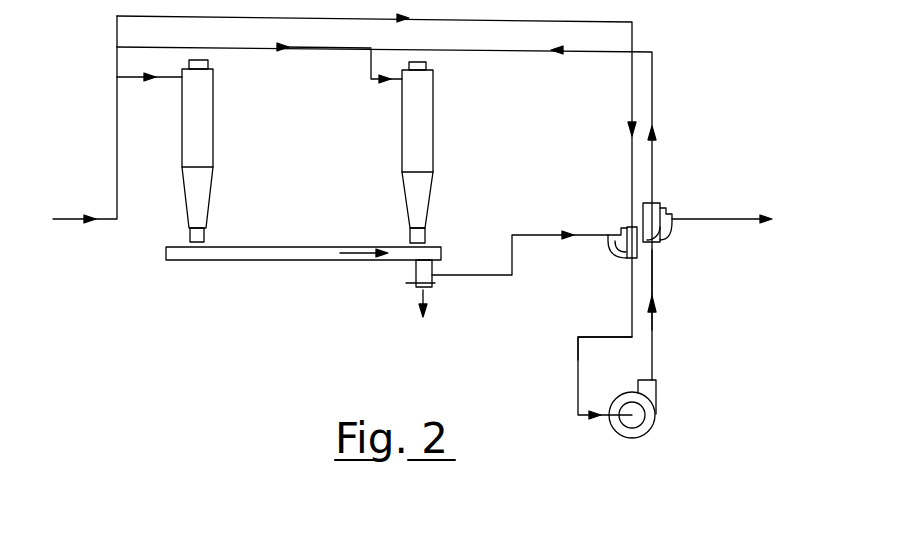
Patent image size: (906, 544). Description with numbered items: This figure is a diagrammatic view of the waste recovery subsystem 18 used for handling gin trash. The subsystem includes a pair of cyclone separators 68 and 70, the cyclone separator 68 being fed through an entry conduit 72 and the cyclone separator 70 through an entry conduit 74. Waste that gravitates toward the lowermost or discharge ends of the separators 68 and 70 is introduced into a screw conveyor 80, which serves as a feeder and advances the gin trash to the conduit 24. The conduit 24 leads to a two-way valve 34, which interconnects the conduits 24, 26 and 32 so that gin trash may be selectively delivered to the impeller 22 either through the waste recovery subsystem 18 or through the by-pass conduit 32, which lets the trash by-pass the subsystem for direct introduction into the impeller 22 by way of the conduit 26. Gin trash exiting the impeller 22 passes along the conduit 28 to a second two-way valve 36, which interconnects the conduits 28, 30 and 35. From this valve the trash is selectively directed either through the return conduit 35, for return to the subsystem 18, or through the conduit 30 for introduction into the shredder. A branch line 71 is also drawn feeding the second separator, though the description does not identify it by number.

The waste recovery subsystem 18 is at (690, 150).
The impeller 22 is at (657, 408).
The conduit 24 is at (525, 235).
The conduit 26 is at (630, 280).
The conduit 28 is at (652, 277).
The conduit 30 is at (733, 219).
The by-pass conduit 32 is at (633, 28).
The two-way valve 34 is at (620, 227).
The return conduit 35 is at (653, 88).
The two-way valve 36 is at (662, 210).
The cyclone separator 68 is at (203, 107).
The cyclone separator 70 is at (423, 105).
The feed line 71 is at (372, 70).
The entry conduit 72 is at (136, 78).
The entry conduit 74 is at (318, 50).
The screw conveyor 80 is at (268, 253).